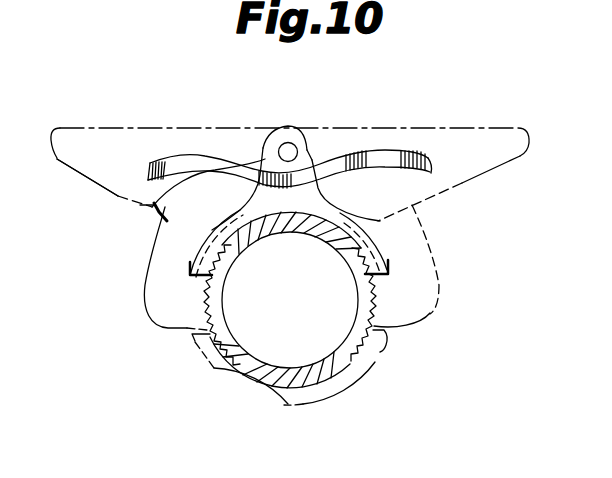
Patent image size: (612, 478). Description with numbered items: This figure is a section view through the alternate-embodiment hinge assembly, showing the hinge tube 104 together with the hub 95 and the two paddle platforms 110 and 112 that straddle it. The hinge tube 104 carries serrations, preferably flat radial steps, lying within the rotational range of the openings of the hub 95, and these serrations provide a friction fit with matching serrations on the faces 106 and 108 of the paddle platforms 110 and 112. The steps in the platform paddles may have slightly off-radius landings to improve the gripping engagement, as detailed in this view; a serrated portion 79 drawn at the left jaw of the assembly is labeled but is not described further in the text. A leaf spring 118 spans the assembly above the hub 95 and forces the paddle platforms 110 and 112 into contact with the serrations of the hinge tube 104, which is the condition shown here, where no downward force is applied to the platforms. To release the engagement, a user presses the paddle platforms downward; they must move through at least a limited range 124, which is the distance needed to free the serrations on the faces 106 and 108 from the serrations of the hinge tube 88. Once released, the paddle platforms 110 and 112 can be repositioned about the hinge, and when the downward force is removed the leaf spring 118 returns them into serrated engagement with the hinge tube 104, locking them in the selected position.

The paddle platform 112 is at (466, 127).
The hub 95 is at (312, 152).
The leaf spring 118 is at (432, 170).
The limited range 124 is at (165, 212).
The paddle platform 110 is at (93, 164).
The hinge tube 104 is at (345, 372).
The jaw 79 is at (210, 272).
The face 108 is at (208, 309).
The face 106 is at (373, 298).
The hinge tube 88 is at (375, 348).